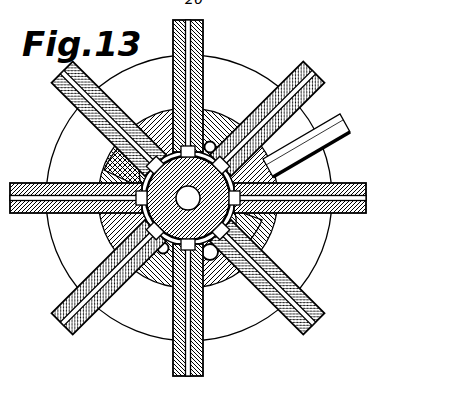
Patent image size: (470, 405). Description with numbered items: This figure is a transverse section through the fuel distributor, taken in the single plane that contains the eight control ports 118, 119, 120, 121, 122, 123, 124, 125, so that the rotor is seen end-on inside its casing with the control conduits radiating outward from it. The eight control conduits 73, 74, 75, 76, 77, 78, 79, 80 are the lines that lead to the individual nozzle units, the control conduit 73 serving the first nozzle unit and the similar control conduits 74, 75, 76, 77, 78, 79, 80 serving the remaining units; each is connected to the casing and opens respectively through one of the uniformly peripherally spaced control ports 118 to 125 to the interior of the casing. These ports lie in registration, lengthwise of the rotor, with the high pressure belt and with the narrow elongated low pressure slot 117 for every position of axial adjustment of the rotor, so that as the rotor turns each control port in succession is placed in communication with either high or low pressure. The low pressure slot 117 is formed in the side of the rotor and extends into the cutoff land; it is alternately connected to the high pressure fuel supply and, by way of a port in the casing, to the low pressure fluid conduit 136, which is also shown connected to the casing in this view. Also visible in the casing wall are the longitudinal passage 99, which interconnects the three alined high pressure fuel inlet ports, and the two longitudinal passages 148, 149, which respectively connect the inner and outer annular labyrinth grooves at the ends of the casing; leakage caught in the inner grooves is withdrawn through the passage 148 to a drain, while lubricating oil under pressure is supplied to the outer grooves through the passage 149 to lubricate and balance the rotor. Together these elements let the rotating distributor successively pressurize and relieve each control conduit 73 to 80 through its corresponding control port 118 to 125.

The control conduit 73 is at (201, 316).
The control conduit 74 is at (100, 270).
The control conduit 75 is at (48, 182).
The control conduit 76 is at (112, 124).
The control conduit 77 is at (205, 46).
The control conduit 78 is at (322, 94).
The control conduit 79 is at (350, 193).
The control conduit 80 is at (284, 284).
The longitudinal passage 99 is at (206, 290).
The low pressure slot 117 is at (188, 198).
The control port 118 is at (160, 282).
The control port 119 is at (104, 234).
The control port 120 is at (108, 162).
The control port 121 is at (116, 143).
The control port 122 is at (174, 122).
The control port 123 is at (280, 172).
The control port 124 is at (276, 228).
The control port 125 is at (268, 244).
The low pressure fluid conduit 136 is at (330, 118).
The longitudinal passage 148 is at (158, 272).
The longitudinal passage 149 is at (232, 130).